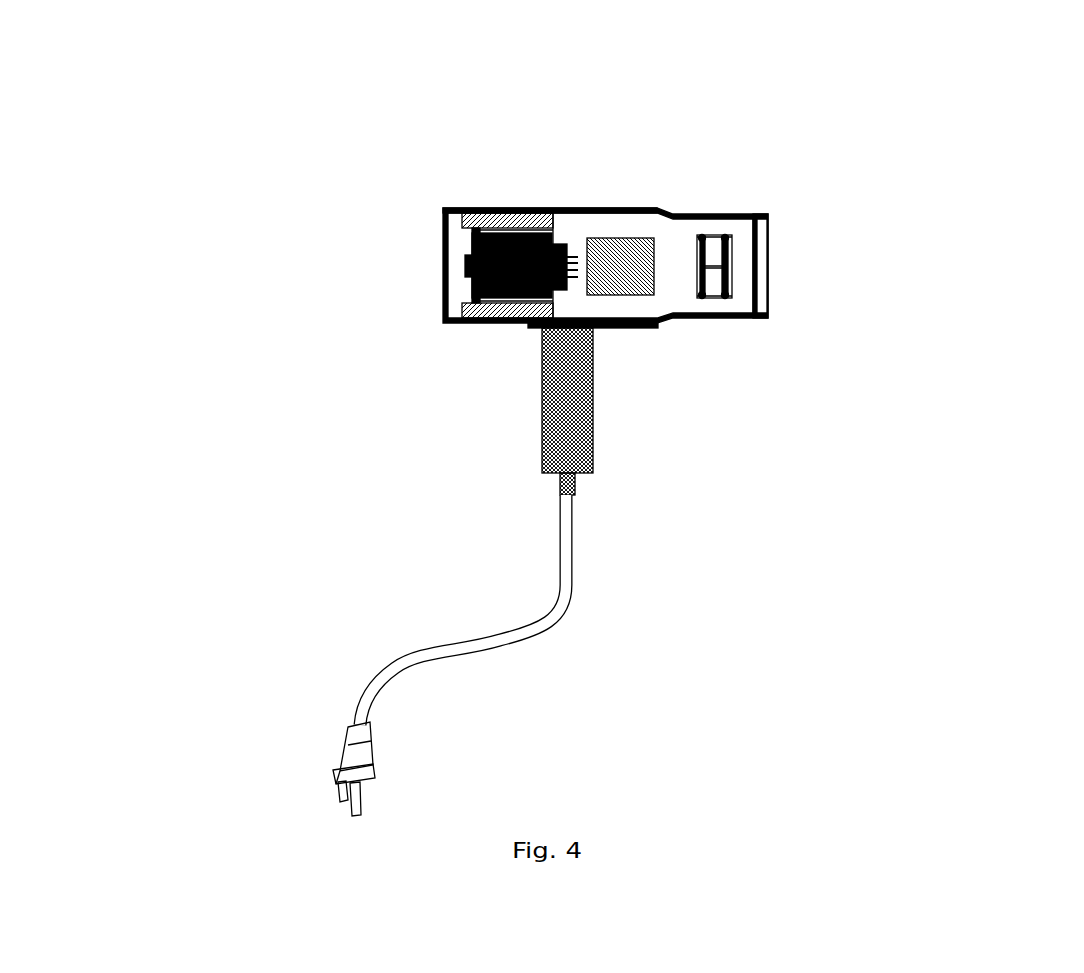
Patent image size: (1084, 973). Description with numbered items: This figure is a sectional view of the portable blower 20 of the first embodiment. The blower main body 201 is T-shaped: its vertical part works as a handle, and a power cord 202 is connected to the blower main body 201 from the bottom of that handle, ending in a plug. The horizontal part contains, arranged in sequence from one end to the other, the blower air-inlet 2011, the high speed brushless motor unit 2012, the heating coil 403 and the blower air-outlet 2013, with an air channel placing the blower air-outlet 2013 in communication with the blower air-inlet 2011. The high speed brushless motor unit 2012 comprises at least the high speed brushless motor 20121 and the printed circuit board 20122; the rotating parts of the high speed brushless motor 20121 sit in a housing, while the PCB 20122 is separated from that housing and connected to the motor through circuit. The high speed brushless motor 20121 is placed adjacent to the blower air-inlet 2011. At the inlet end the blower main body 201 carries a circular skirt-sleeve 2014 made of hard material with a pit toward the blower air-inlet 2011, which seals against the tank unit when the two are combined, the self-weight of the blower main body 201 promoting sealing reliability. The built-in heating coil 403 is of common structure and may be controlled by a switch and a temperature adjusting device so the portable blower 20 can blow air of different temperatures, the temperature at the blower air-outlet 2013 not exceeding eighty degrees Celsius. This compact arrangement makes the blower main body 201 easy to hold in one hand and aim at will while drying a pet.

The portable blower 20 is at (167, 120).
The blower main body 201 is at (616, 206).
The blower air-inlet 2011 is at (444, 243).
The high speed brushless motor unit 2012 is at (577, 187).
The high speed brushless motor 20121 is at (473, 323).
The printed circuit board (PCB) 20122 is at (620, 295).
The blower air-outlet 2013 is at (753, 262).
The circular skirt-sleeve 2014 is at (527, 207).
The heating coil 403 is at (725, 298).
The power cord 202 is at (424, 648).